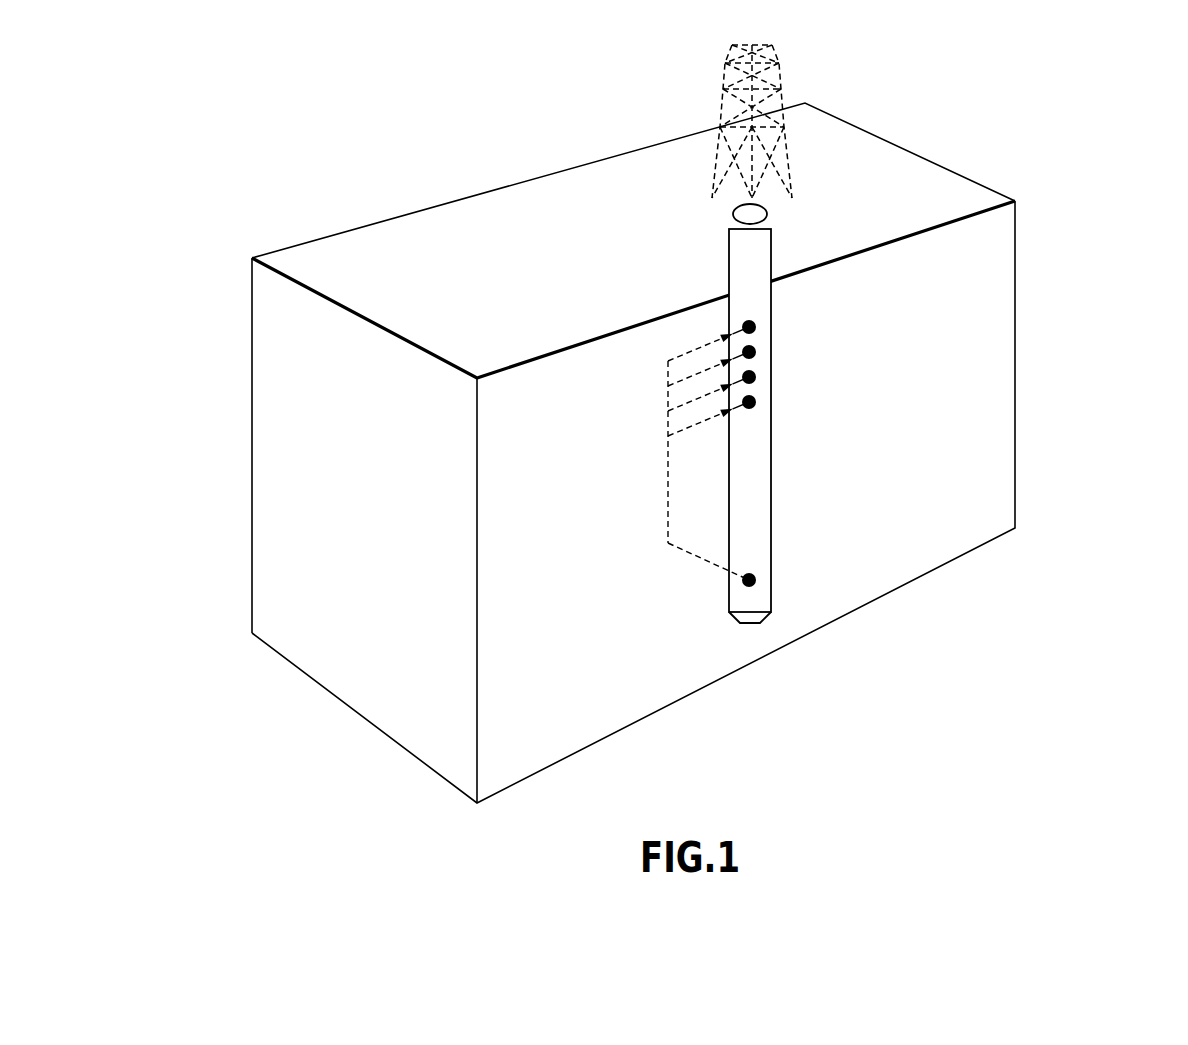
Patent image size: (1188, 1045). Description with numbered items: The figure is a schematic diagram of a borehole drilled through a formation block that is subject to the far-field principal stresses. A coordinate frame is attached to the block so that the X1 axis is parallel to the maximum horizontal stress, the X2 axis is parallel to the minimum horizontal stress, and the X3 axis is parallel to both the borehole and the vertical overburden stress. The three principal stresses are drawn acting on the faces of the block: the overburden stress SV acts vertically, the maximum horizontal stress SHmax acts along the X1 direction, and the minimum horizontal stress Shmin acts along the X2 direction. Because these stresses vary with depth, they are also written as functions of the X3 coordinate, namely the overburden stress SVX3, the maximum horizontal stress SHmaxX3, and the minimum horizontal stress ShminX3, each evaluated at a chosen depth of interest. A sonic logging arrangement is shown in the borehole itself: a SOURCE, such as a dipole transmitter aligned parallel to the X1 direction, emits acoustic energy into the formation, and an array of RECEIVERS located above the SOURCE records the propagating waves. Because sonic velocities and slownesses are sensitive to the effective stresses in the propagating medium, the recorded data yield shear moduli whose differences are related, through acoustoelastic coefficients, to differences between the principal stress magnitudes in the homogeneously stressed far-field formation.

The X1-direction X1 is at (252, 258).
The X2-direction X2 is at (1071, 182).
The X3-direction X3 is at (477, 803).
The overburden stress SV is at (687, 698).
The overburden stress as a function of depth SVX3 is at (617, 220).
The maximum horizontal stress SHmax is at (833, 542).
The maximum horizontal stress as a function of depth SHmaxX3 is at (500, 186).
The minimum horizontal stress Shmin is at (348, 493).
The minimum horizontal stress as a function of depth ShminX3 is at (1015, 288).
The receivers RECEIVERS is at (823, 364).
The source SOURCE is at (678, 587).